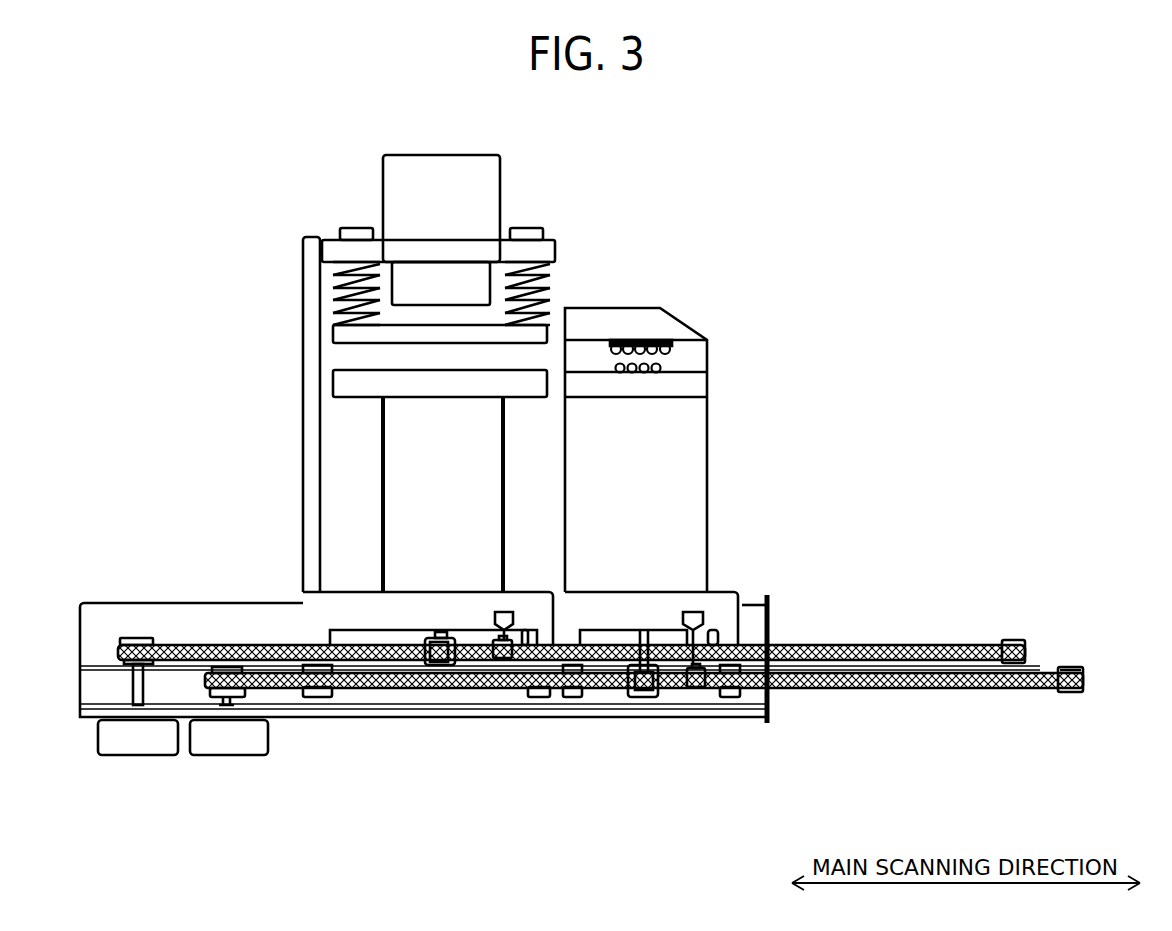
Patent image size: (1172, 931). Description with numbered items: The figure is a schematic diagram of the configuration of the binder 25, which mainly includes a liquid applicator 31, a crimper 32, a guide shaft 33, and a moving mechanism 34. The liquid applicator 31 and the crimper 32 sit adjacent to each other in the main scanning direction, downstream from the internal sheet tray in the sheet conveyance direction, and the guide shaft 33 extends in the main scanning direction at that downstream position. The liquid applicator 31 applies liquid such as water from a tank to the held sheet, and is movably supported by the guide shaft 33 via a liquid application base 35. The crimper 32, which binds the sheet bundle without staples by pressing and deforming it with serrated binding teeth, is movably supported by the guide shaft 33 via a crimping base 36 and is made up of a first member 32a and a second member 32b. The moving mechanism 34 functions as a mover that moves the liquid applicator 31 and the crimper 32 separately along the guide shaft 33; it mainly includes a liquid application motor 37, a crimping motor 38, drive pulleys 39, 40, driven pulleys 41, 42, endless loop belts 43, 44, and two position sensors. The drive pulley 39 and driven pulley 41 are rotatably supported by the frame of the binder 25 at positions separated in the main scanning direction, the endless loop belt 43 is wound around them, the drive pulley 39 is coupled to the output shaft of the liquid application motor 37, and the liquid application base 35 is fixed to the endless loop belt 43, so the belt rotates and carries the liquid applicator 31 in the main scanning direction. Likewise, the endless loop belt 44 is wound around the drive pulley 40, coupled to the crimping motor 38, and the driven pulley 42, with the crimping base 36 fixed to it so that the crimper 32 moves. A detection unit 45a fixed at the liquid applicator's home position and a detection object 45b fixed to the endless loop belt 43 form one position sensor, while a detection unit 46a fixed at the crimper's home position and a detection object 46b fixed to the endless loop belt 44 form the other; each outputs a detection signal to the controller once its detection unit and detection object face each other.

The binder 25 is at (785, 176).
The liquid applicator 31 is at (500, 172).
The crimper 32 is at (777, 327).
The first member 32a is at (672, 347).
The second member 32b is at (663, 368).
The guide shaft 33 is at (103, 672).
The moving mechanism 34 is at (218, 545).
The liquid application base 35 is at (427, 598).
The crimping base 36 is at (627, 598).
The liquid application motor 37 is at (143, 757).
The crimping motor 38 is at (233, 757).
The drive pulley 39 is at (140, 640).
The drive pulley 40 is at (232, 667).
The driven pulley 41 is at (1010, 640).
The driven pulley 42 is at (1068, 667).
The endless loop belt 43 is at (850, 645).
The endless loop belt 44 is at (882, 688).
The detection unit 45a is at (503, 610).
The detection object 45b is at (503, 660).
The detection unit 46a is at (693, 610).
The detection object 46b is at (696, 688).